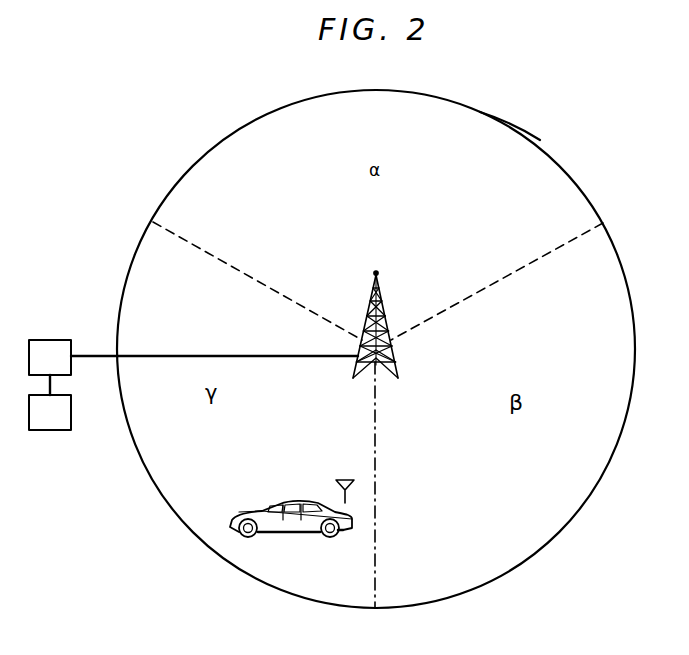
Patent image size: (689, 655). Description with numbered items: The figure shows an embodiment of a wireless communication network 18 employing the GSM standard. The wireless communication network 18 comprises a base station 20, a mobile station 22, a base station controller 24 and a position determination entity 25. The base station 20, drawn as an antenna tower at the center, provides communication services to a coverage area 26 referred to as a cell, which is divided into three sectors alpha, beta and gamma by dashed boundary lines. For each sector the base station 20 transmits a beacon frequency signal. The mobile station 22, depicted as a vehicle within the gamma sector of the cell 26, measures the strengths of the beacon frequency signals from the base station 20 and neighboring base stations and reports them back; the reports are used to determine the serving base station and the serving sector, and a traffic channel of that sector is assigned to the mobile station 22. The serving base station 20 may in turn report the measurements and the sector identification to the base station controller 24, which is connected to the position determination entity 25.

The wireless communication network 18 is at (388, 76).
The base station 20 is at (383, 300).
The mobile station 22 is at (302, 498).
The base station controller 24 is at (49, 340).
The position determination entity 25 is at (50, 430).
The coverage area 26 is at (508, 123).